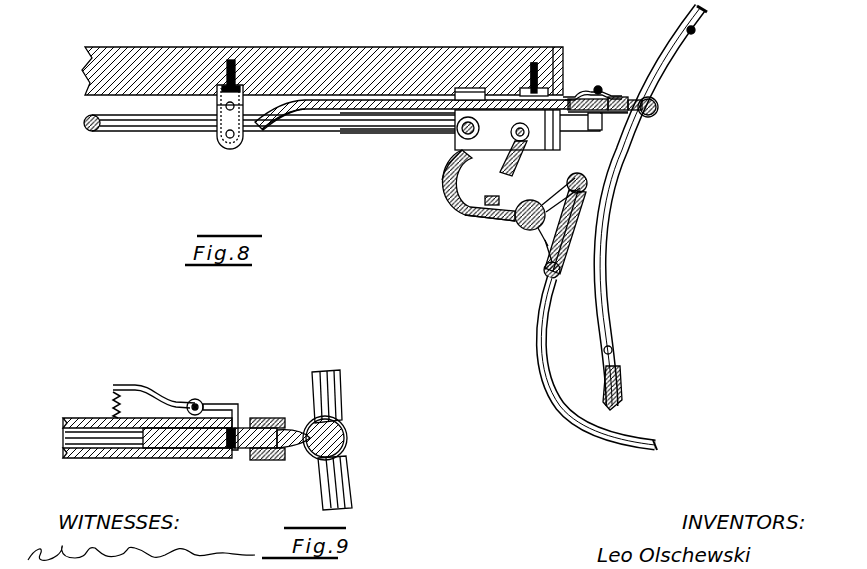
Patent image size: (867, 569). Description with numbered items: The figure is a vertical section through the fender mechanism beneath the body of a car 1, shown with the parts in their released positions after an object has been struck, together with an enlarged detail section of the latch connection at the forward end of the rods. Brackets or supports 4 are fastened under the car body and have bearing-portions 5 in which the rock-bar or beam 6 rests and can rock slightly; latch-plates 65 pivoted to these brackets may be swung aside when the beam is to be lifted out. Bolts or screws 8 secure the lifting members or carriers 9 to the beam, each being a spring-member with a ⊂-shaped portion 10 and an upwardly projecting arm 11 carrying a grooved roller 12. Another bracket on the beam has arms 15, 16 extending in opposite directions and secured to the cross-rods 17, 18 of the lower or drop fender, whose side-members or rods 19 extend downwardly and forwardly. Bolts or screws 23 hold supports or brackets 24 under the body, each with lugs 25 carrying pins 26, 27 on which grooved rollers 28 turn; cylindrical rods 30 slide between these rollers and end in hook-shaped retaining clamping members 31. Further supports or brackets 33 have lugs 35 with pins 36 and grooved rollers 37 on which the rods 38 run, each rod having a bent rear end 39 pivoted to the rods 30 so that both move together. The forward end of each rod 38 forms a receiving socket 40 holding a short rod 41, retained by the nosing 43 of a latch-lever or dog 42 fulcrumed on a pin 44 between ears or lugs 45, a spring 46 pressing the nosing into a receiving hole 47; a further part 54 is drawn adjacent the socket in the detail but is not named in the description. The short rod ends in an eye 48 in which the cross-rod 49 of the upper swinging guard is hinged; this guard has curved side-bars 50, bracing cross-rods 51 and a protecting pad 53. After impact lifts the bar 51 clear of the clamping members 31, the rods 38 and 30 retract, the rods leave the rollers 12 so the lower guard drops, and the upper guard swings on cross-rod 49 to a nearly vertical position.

In FIG. 8, the body of a car 1 is at (128, 50).
In FIG. 8, the brackets or supports 4 is at (446, 172).
In FIG. 8, the bearing-portions 5 is at (545, 242).
In FIG. 8, the rock-bar or beam 6 is at (520, 226).
In FIG. 8, the bolts or screws 8 is at (548, 208).
In FIG. 8, the lifting members or carriers 9 is at (500, 217).
In FIG. 8, the ⊂-shaped portion 10 is at (460, 194).
In FIG. 8, the upwardly projecting arms 11 is at (508, 150).
In FIG. 8, the grooved rollers 12 is at (455, 136).
In FIG. 8, the arm 15 is at (590, 184).
In FIG. 8, the arm 16 is at (546, 262).
In FIG. 8, the cross-rod 17 is at (586, 198).
In FIG. 8, the cross-rod 18 is at (556, 279).
In FIG. 8, the side-members or rods 19 is at (574, 249).
In FIG. 8, the bolts or screws 23 is at (229, 60).
In FIG. 8, the supports or brackets 24 is at (242, 86).
In FIG. 8, the downwardly extending elements or lugs 25 is at (240, 146).
In FIG. 8, the laterally extending pin 26 is at (226, 125).
In FIG. 8, the laterally extending pin 27 is at (230, 140).
In FIG. 8, the grooved roller or wheel 28 is at (215, 108).
In FIG. 8, the cylindrical rods 30 is at (92, 131).
In FIG. 8, the hook-shaped holding or retaining clamping members 31 is at (604, 130).
In FIG. 8, the supports or brackets 33 is at (472, 88).
In FIG. 8, the downwardly extending elements or lugs 35 is at (457, 88).
In FIG. 8, the laterally extending pins 36 is at (402, 128).
In FIG. 8, the grooved rollers or wheels 37 is at (382, 110).
In FIG. 8, the rods 38 is at (332, 111).
In FIG. 9, the rods 38 is at (100, 458).
In FIG. 8, the bent rear end 39 is at (278, 130).
In FIG. 8, the receiving socket 40 is at (604, 114).
In FIG. 9, the receiving socket 40 is at (90, 418).
In FIG. 8, the short rod 41 is at (643, 98).
In FIG. 9, the short rod 41 is at (300, 432).
In FIG. 8, the latch-lever or dog 42 is at (576, 95).
In FIG. 9, the latch-lever or dog 42 is at (132, 386).
In FIG. 8, the nosing 43 is at (612, 97).
In FIG. 9, the nosing 43 is at (236, 404).
In FIG. 8, the pin 44 is at (600, 86).
In FIG. 9, the pin 44 is at (200, 398).
In FIG. 9, the ears or lugs 45 is at (190, 400).
In FIG. 9, the spring 46 is at (112, 393).
In FIG. 9, the receiving hole 47 is at (232, 450).
In FIG. 8, the eye or ring-shaped member 48 is at (655, 113).
In FIG. 9, the eye or ring-shaped member 48 is at (349, 447).
In FIG. 8, the cross-rod 49 is at (657, 107).
In FIG. 9, the cross-rod 49 is at (346, 437).
In FIG. 8, the side-bars or rods 50 is at (676, 70).
In FIG. 9, the side-bars or rods 50 is at (341, 380).
In FIG. 8, the cross-rods or bars 51 is at (696, 30).
In FIG. 8, the protecting cushion or pad 53 is at (618, 97).
In FIG. 9, the collar 54 is at (268, 460).
In FIG. 8, the latch-plates 65 is at (504, 189).